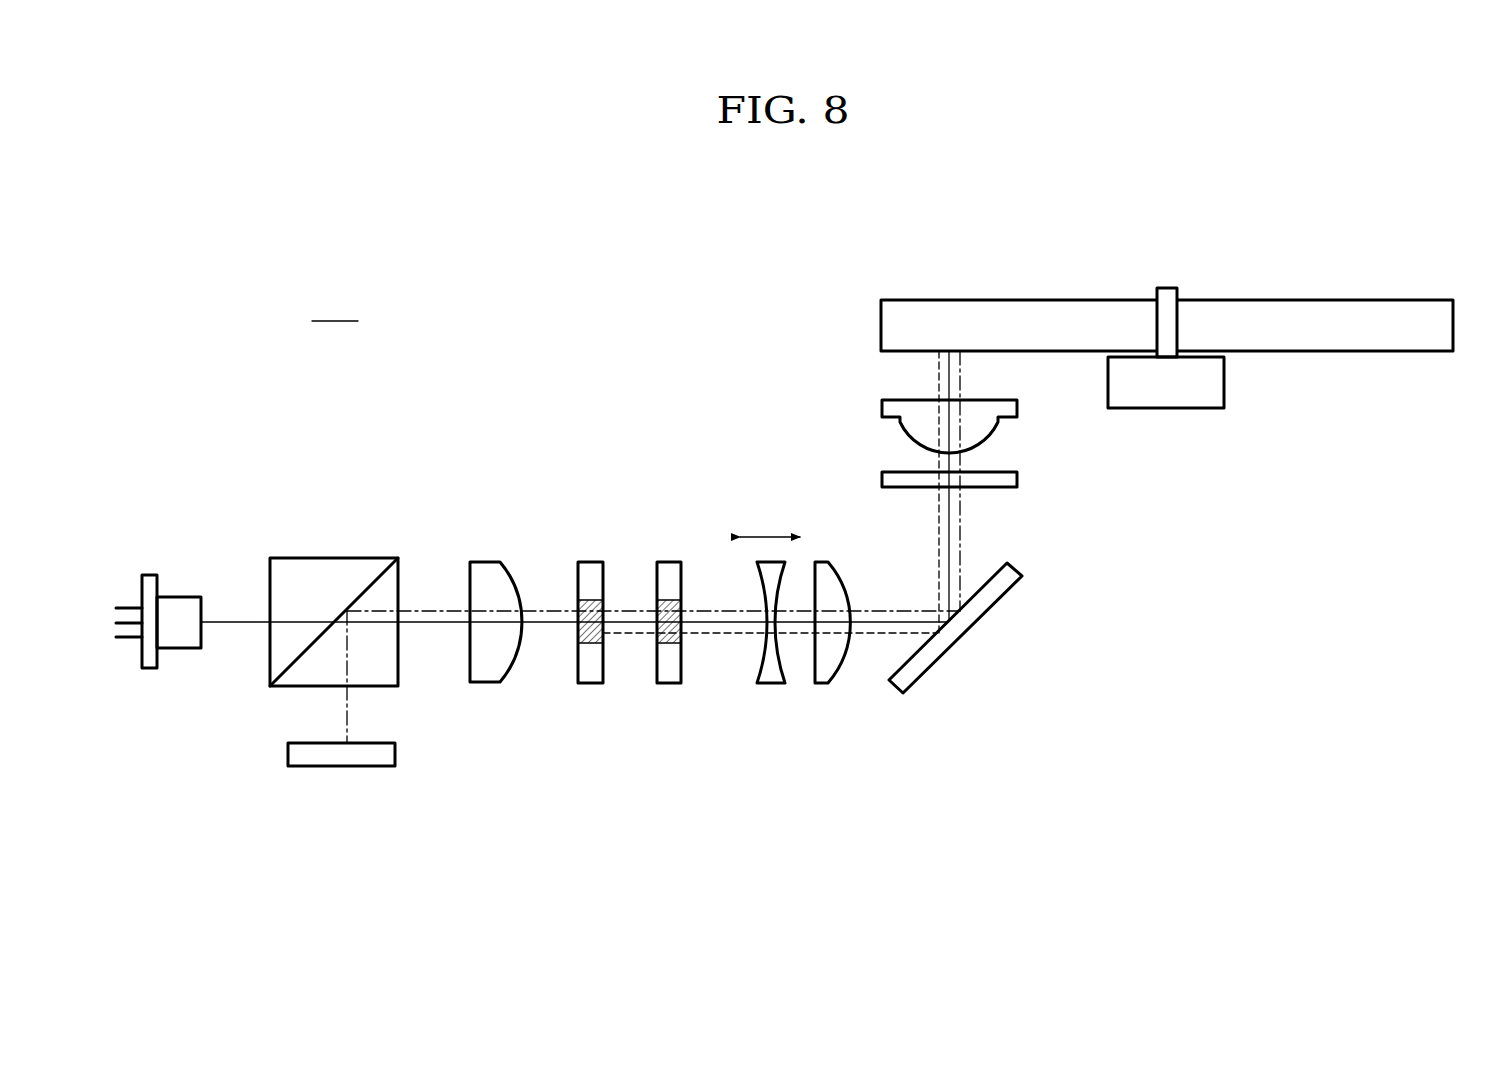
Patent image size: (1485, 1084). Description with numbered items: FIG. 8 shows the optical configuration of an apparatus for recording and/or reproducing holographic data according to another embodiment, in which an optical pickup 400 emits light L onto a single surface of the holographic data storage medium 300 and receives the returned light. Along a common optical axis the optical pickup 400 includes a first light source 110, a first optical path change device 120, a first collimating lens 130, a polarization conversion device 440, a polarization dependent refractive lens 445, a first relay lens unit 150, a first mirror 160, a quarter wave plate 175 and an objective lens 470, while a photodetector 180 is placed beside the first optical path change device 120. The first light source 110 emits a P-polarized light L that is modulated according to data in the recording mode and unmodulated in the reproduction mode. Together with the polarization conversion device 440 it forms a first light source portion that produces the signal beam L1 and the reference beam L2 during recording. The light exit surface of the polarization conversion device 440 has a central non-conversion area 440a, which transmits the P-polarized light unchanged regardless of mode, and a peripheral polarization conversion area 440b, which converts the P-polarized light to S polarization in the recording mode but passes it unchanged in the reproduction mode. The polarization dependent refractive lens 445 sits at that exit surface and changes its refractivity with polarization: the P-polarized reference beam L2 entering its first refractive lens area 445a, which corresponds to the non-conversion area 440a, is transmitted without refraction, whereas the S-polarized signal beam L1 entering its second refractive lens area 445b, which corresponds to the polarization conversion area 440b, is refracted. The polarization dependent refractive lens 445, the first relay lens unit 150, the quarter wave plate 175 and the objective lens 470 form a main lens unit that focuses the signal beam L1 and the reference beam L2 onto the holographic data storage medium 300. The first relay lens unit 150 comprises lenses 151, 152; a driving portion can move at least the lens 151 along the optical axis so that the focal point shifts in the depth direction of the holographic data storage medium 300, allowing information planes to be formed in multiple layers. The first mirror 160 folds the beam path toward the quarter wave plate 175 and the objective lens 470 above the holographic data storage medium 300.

The first light source 110 is at (150, 668).
The first optical path change device 120 is at (298, 558).
The first collimating lens 130 is at (483, 563).
The photodetector 180 is at (396, 754).
The polarization conversion device 440 is at (579, 616).
The non-conversion area 440a is at (577, 627).
The polarization conversion area 440b is at (577, 577).
The polarization dependent refractive lens 445 is at (657, 616).
The first refractive lens area 445a is at (655, 627).
The second refractive lens area 445b is at (655, 577).
The first relay lens unit 150 is at (795, 662).
The lens 151 is at (770, 683).
The lens 152 is at (825, 653).
The first mirror 160 is at (1007, 592).
The quarter wave plate 175 is at (882, 478).
The objective lens 470 is at (882, 407).
The holographic data storage medium 300 is at (1366, 300).
The optical pickup 400 is at (335, 309).
The light L is at (232, 623).
The signal beam L1 is at (716, 627).
The reference beam L2 is at (903, 633).